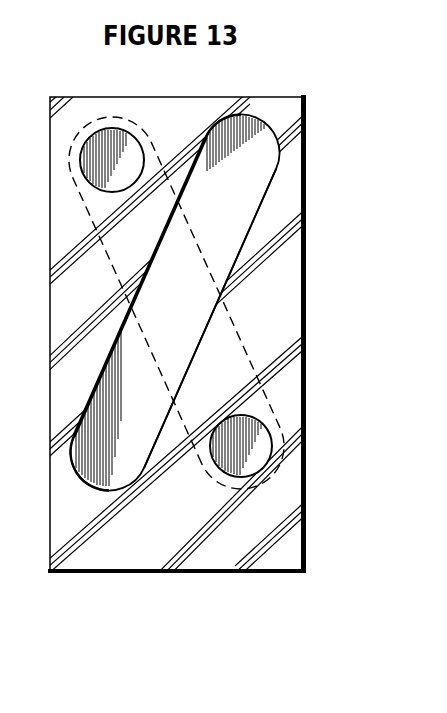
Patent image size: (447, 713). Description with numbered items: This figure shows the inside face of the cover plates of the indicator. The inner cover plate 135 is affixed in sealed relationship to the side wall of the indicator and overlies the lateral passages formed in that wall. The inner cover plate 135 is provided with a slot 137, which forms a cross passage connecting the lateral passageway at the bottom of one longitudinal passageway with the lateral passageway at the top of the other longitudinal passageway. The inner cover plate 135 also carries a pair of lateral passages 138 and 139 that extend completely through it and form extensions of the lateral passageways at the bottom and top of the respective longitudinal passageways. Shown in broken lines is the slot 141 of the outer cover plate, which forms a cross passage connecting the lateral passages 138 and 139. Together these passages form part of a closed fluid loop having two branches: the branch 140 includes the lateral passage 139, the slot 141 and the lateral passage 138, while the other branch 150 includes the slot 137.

The inner cover plate 135 is at (283, 326).
The slot 137 is at (240, 207).
The lateral passage 138 is at (258, 449).
The lateral passage 139 is at (104, 169).
The branch 140 is at (101, 247).
The slot 141 is at (85, 203).
The branch 150 is at (280, 182).